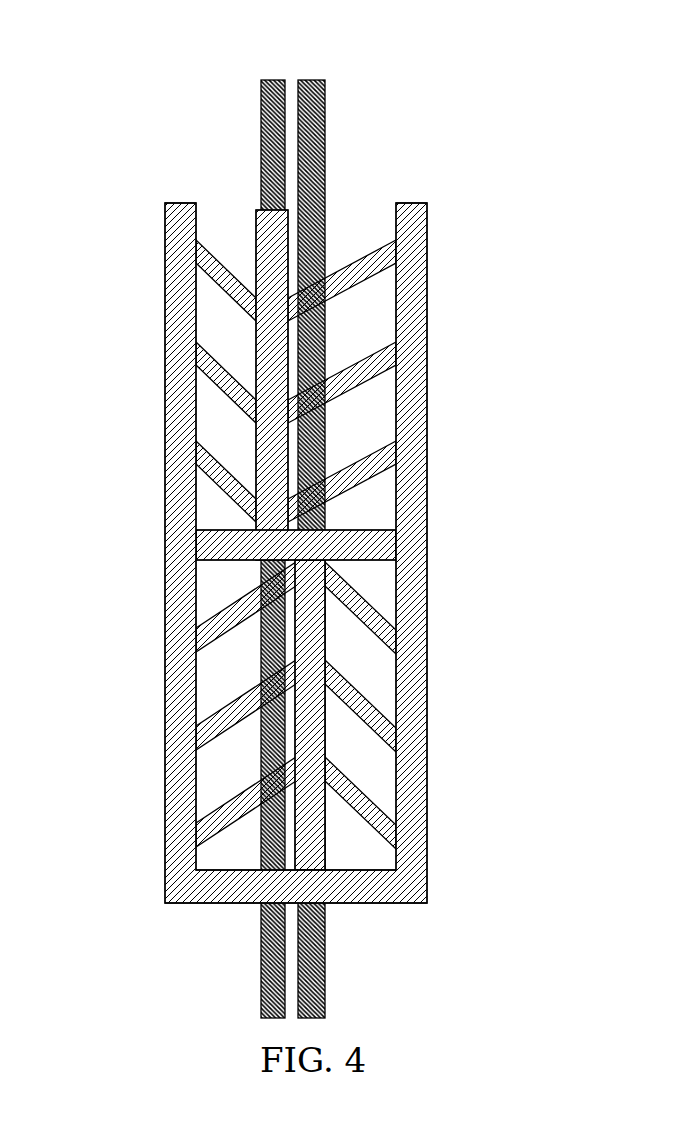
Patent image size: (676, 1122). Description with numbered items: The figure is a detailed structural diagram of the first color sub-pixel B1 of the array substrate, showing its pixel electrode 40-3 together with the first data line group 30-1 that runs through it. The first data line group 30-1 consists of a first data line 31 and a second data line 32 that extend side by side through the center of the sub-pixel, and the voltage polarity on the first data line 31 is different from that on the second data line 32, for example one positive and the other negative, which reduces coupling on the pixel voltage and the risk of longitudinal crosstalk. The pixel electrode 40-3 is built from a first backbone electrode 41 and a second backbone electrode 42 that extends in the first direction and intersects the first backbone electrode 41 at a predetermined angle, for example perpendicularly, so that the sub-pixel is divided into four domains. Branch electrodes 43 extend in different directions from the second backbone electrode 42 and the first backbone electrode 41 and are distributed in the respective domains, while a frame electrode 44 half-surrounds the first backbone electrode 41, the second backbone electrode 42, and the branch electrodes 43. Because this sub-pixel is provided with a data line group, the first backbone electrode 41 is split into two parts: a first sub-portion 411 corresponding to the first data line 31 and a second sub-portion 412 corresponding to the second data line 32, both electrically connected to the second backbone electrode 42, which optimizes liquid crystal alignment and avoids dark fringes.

The first color sub-pixel B1 is at (160, 121).
The first data line group 30-1 is at (328, 32).
The first data line 31 is at (280, 81).
The second data line 32 is at (306, 81).
The pixel electrode 40-3 is at (507, 422).
The first backbone electrode 41 is at (82, 397).
The first sub-portion 411 is at (275, 455).
The second sub-portion 412 is at (296, 658).
The second backbone electrode 42 is at (355, 543).
The branch electrodes 43 is at (357, 470).
The frame electrode 44 is at (407, 397).